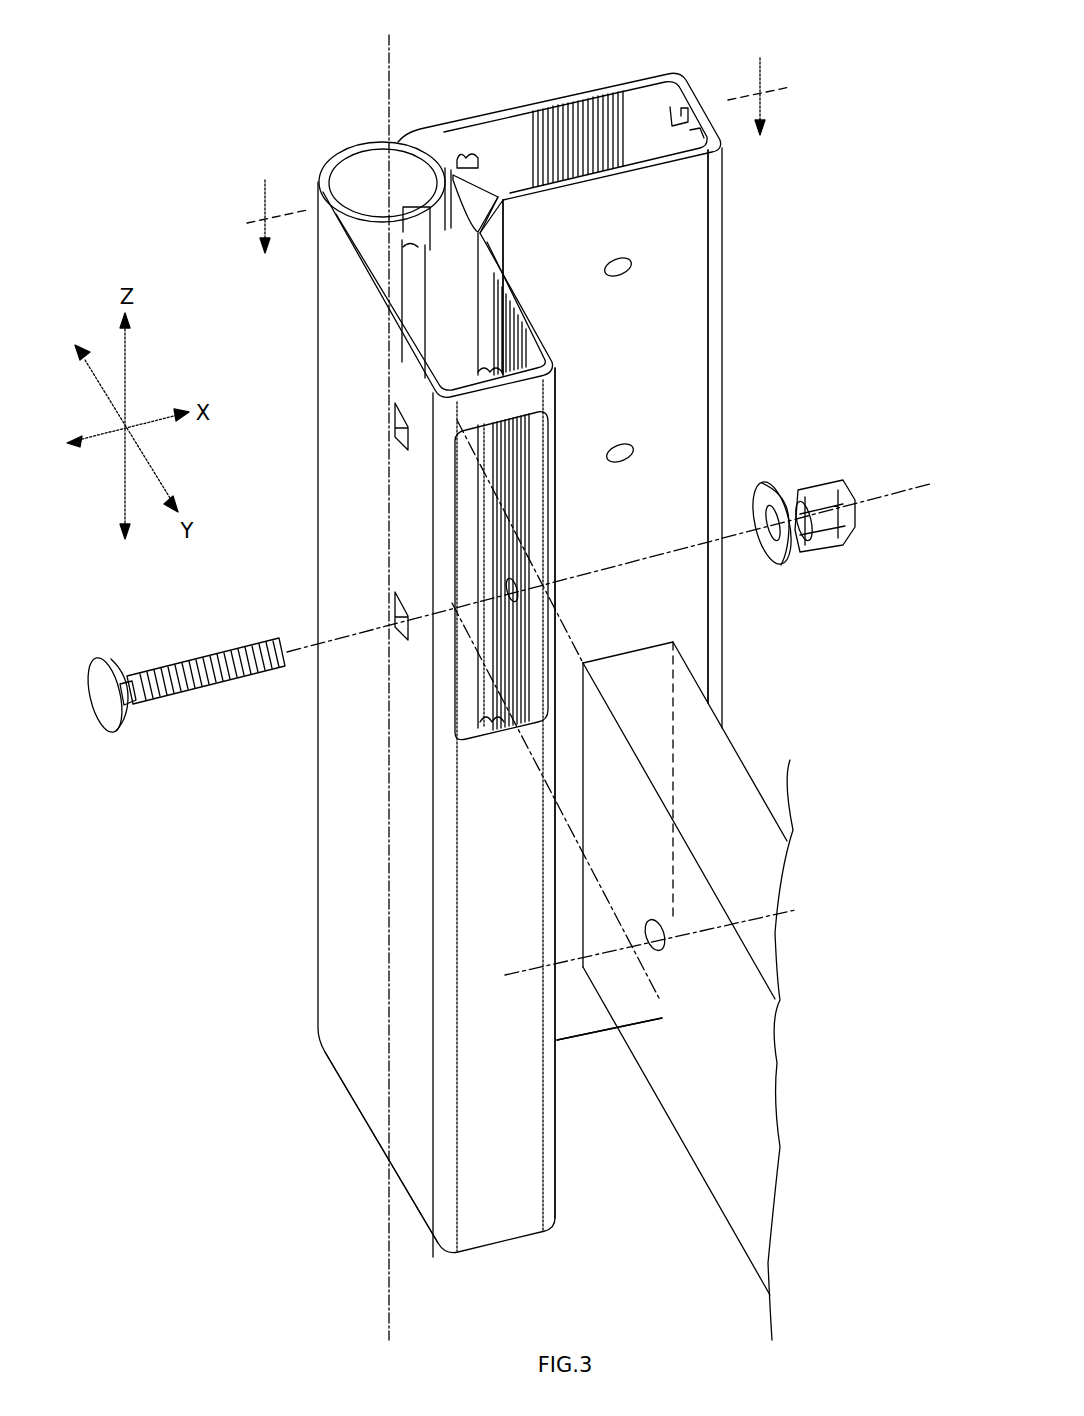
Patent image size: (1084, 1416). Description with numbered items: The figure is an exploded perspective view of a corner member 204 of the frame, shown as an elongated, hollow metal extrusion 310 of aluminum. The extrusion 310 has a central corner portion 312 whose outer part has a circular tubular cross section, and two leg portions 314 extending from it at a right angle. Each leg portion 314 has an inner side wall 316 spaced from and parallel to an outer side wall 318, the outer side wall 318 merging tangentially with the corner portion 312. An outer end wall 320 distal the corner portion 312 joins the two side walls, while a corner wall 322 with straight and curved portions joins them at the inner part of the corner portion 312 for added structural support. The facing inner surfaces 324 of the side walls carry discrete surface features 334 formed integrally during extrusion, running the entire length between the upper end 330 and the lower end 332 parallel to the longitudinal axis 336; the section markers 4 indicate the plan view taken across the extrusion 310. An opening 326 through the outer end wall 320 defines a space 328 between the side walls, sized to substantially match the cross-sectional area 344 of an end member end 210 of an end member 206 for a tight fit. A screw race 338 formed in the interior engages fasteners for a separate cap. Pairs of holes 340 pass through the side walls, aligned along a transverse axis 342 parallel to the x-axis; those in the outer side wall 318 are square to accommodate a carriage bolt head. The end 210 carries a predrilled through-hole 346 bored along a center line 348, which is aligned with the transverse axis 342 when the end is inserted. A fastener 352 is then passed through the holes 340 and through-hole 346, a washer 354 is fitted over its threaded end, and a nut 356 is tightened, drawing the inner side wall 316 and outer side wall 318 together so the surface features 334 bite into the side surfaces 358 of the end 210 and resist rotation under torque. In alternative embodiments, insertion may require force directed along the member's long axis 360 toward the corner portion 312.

The corner member 204 is at (185, 130).
The end member 206 is at (725, 1192).
The end member end 210 is at (652, 665).
The metal extrusion 310 is at (350, 852).
The central corner portion 312 is at (373, 177).
The leg portion 314 is at (735, 222).
The inner side wall 316 is at (700, 160).
The outer side wall 318 is at (460, 125).
The outer end wall 320 is at (690, 85).
The corner wall 322 is at (485, 185).
The inner surface 324 is at (640, 105).
The opening 326 is at (445, 568).
The space 328 is at (552, 238).
The upper end 330 is at (410, 123).
The lower end 332 is at (333, 1118).
The surface features 334 is at (507, 330).
The longitudinal axis 336 is at (385, 83).
The screw race 338 is at (700, 132).
The hole 340 is at (632, 280).
The transverse axis 342 is at (288, 660).
The cross-sectional area 344 is at (713, 787).
The through-hole 346 is at (663, 948).
The center line 348 is at (713, 920).
The fastener 352 is at (170, 665).
The washer 354 is at (792, 548).
The nut 356 is at (835, 497).
The side surface 358 is at (673, 760).
The long axis 360 is at (760, 1030).
The section line 4 is at (518, 141).